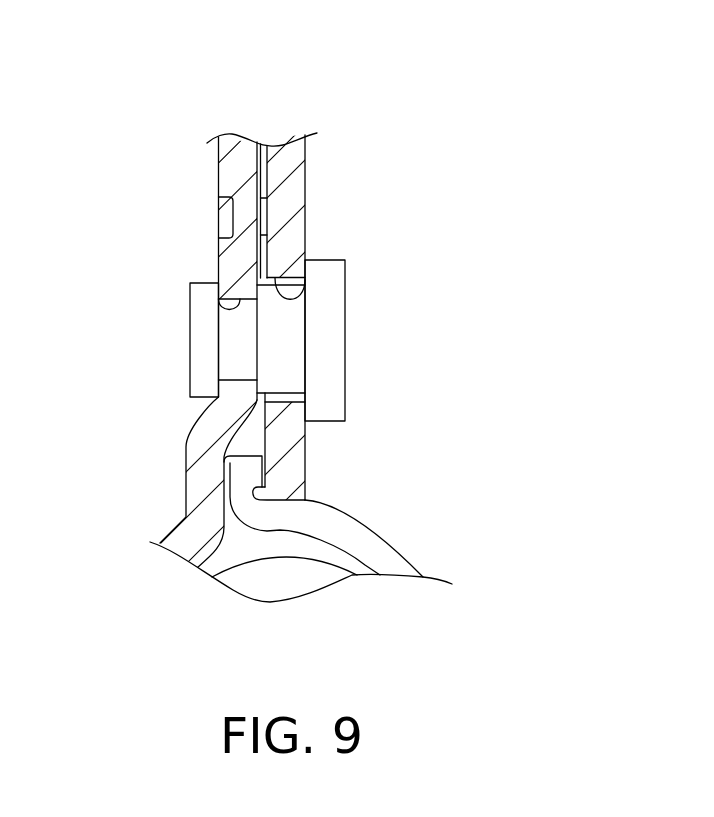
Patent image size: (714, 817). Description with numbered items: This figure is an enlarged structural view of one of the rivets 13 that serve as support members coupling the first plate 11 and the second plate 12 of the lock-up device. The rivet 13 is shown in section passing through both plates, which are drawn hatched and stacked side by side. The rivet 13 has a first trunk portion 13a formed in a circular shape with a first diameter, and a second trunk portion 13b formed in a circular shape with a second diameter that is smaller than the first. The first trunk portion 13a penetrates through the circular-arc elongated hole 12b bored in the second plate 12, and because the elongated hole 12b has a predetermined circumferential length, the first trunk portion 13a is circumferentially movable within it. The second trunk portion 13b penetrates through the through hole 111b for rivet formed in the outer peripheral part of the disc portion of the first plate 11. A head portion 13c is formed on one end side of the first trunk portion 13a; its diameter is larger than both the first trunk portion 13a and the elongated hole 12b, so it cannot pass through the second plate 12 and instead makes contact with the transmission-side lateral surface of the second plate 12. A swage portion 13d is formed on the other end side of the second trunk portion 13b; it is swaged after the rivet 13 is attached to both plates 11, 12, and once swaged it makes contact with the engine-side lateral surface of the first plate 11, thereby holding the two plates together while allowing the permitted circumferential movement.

The first plate 11 is at (230, 175).
The through hole for rivet 111b is at (222, 308).
The second plate 12 is at (288, 153).
The circular-arc elongated hole 12b is at (303, 290).
The rivet 13 is at (397, 262).
The first trunk portion 13a is at (290, 377).
The second trunk portion 13b is at (237, 373).
The head portion 13c is at (325, 305).
The swage portion 13d is at (200, 330).